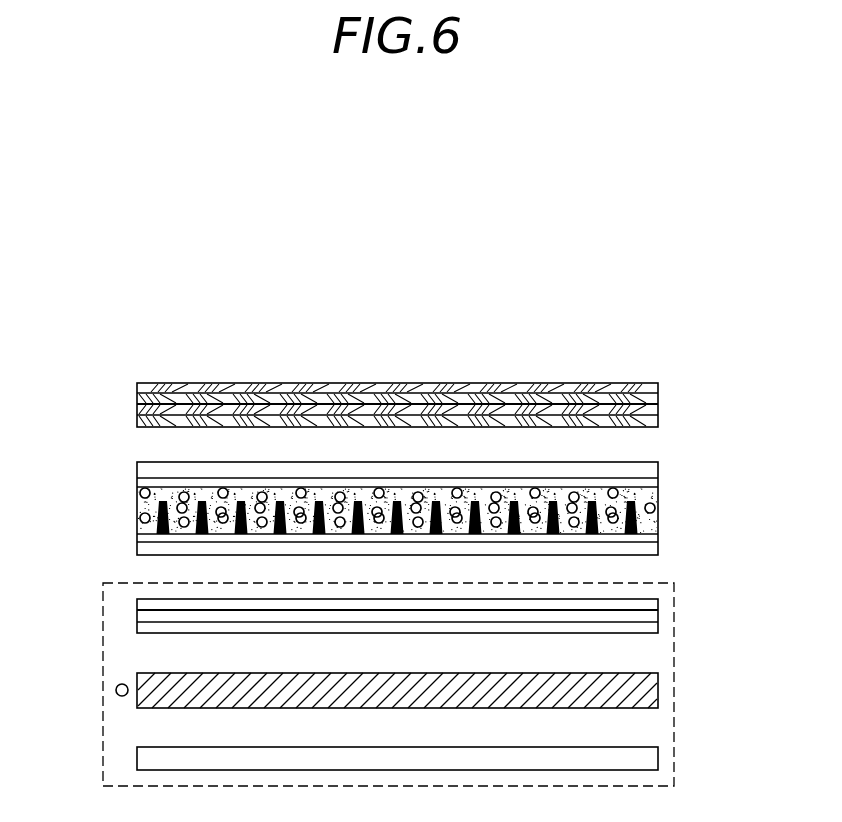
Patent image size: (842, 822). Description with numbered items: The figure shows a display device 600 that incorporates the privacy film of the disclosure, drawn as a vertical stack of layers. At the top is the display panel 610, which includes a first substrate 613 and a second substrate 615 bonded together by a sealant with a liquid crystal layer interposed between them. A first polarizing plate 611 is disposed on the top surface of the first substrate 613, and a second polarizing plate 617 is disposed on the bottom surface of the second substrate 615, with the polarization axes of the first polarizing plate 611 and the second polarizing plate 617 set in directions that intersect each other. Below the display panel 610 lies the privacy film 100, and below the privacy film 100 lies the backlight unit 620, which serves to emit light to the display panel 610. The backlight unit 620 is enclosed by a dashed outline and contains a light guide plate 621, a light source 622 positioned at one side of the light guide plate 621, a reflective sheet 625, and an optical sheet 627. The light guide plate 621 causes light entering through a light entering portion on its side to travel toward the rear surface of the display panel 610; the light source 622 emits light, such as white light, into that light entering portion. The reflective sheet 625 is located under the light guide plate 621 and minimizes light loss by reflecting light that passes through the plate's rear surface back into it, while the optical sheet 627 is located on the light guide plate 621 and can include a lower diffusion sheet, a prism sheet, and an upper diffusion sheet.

The display device 600 is at (606, 356).
The display panel 610 is at (738, 368).
The first polarizing plate 611 is at (658, 388).
The first substrate 613 is at (658, 398).
The second substrate 615 is at (658, 410).
The second polarizing plate 617 is at (658, 420).
The privacy film 100 is at (670, 508).
The backlight unit 620 is at (103, 630).
The light guide plate 621 is at (650, 690).
The light source 622 is at (116, 690).
The reflective sheet 625 is at (650, 757).
The optical sheet 627 is at (670, 600).